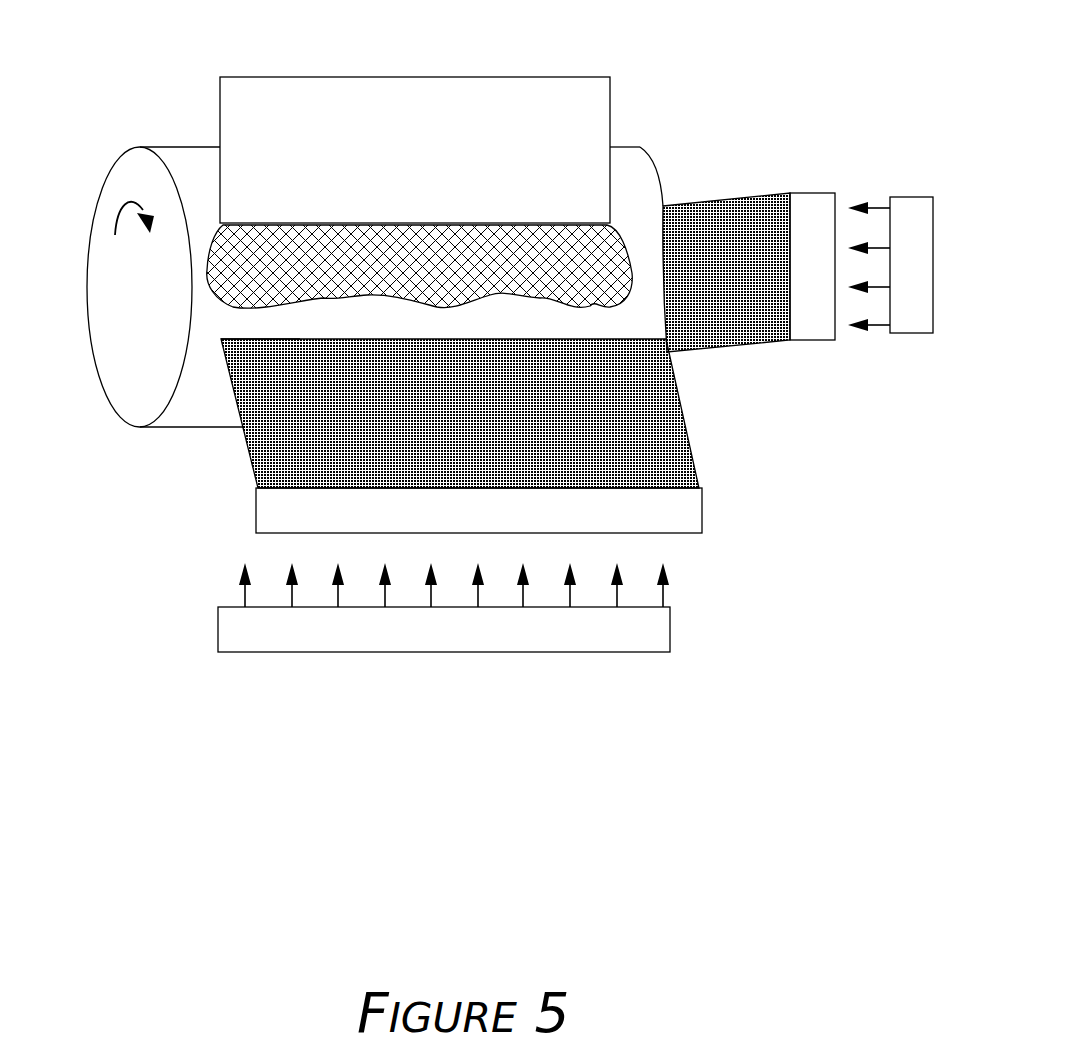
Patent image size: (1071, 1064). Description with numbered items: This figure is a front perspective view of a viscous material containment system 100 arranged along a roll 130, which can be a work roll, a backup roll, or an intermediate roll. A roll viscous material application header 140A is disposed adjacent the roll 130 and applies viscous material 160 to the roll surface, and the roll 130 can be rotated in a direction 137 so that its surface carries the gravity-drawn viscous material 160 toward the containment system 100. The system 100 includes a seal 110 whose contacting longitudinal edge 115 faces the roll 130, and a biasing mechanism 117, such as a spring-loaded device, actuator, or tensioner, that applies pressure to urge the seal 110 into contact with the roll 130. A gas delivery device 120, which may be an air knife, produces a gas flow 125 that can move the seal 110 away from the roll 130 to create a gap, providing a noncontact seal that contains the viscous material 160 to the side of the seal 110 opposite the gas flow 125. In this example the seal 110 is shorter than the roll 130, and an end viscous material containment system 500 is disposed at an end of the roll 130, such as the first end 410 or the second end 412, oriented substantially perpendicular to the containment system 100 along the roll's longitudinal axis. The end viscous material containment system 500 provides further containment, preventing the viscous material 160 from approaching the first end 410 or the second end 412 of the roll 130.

The viscous material containment system 100 is at (155, 714).
The seal 110 is at (268, 458).
The contacting longitudinal edge 115 is at (213, 339).
The biasing mechanism 117 is at (268, 519).
The gas delivery device 120 is at (650, 640).
The gas flow 125 is at (212, 577).
The roll 130 is at (178, 157).
The direction 137 is at (116, 226).
The roll viscous material application header 140A is at (253, 87).
The viscous material 160 is at (213, 240).
The first end 410 is at (123, 317).
The second end 412 is at (661, 172).
The end viscous material containment system 500 is at (815, 405).